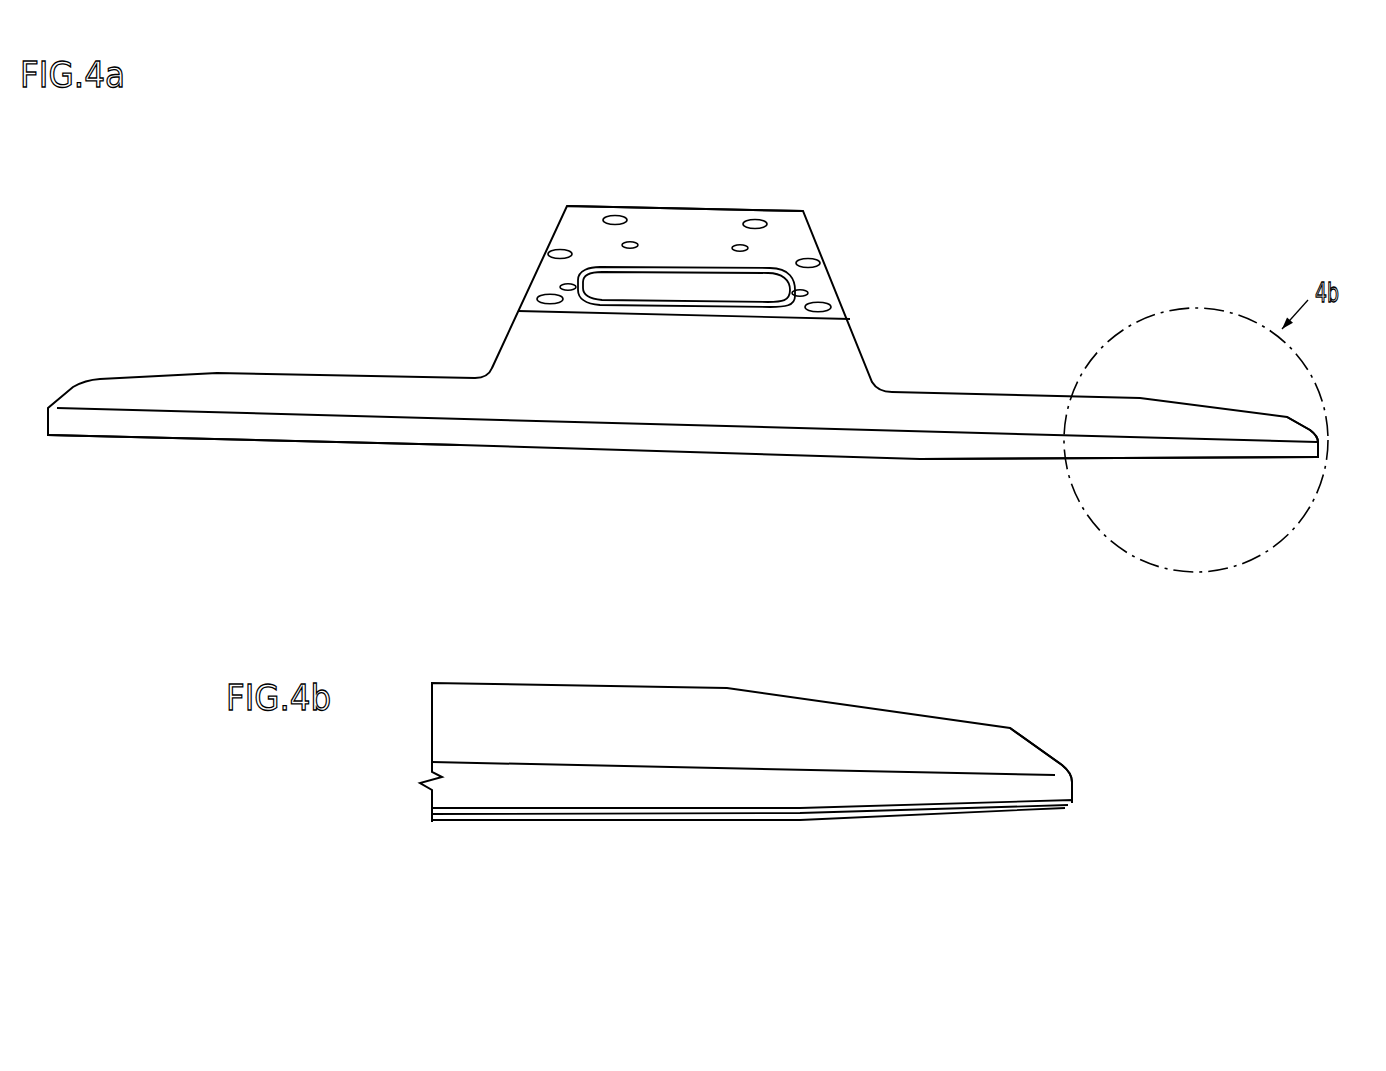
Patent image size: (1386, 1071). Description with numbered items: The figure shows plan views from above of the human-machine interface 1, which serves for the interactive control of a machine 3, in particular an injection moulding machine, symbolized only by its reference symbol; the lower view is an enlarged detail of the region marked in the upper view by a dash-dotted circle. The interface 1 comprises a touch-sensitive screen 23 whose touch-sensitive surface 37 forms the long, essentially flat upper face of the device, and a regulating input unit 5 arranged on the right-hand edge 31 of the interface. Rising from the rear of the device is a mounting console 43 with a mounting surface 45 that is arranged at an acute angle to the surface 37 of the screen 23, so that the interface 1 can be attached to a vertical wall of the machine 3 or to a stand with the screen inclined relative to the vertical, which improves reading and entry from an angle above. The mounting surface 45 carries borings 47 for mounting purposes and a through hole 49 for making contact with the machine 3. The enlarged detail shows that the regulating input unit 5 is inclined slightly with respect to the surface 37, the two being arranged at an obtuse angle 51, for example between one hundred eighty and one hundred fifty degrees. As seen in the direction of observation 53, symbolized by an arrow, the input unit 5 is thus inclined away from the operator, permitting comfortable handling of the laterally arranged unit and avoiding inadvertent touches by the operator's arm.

In FIG. 4a, the human-machine interface 1 is at (881, 359).
In FIG. 4b, the human-machine interface 1 is at (565, 674).
In FIG. 4a, the machine 3 is at (667, 150).
In FIG. 4a, the regulating input unit 5 is at (1203, 463).
In FIG. 4b, the regulating input unit 5 is at (897, 818).
In FIG. 4a, the touch-sensitive screen 23 is at (520, 448).
In FIG. 4b, the touch-sensitive screen 23 is at (743, 768).
In FIG. 4a, the right-hand edge 31 is at (1320, 450).
In FIG. 4b, the right-hand edge 31 is at (1073, 788).
In FIG. 4a, the touch-sensitive surface 37 is at (174, 446).
In FIG. 4b, the touch-sensitive surface 37 is at (496, 827).
In FIG. 4a, the mounting console 43 is at (803, 252).
In FIG. 4a, the mounting surface 45 is at (587, 232).
In FIG. 4a, the borings 47 is at (750, 220).
In FIG. 4a, the through hole 49 is at (707, 297).
In FIG. 4b, the obtuse angle 51 is at (705, 820).
In FIG. 4a, the direction of observation 53 is at (692, 460).
In FIG. 4b, the direction of observation 53 is at (583, 832).